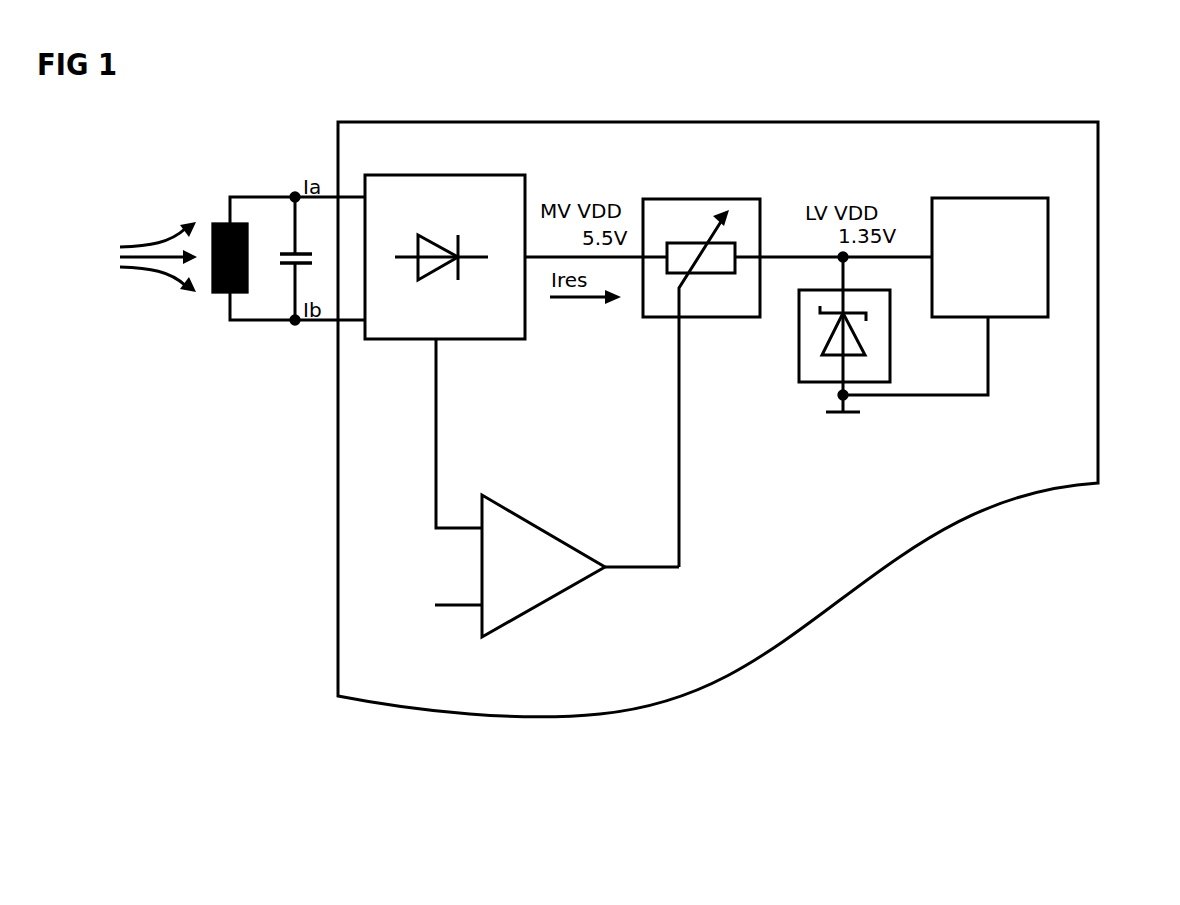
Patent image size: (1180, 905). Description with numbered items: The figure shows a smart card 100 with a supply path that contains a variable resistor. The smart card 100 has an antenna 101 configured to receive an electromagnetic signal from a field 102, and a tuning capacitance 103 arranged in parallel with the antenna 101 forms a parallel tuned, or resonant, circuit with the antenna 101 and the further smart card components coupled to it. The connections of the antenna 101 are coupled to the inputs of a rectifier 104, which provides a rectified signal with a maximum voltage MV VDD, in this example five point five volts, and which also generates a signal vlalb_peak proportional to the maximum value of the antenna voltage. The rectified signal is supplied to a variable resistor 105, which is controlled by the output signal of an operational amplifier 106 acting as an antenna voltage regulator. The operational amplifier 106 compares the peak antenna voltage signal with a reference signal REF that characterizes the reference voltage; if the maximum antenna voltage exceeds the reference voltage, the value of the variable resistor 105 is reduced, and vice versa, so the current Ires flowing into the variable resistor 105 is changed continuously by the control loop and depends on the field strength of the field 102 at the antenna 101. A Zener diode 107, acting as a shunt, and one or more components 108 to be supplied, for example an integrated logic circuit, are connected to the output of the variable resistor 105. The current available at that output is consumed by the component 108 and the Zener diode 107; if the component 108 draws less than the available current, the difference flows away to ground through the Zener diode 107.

The smart card 100 is at (1070, 122).
The antenna 101 is at (222, 223).
The field 102 is at (152, 233).
The tuning capacitance 103 is at (285, 254).
The rectifier 104 is at (512, 175).
The variable resistor 105 is at (760, 200).
The operational amplifier 106 is at (512, 503).
The Zener diode 107 is at (890, 348).
The component to be supplied 108 is at (1048, 232).